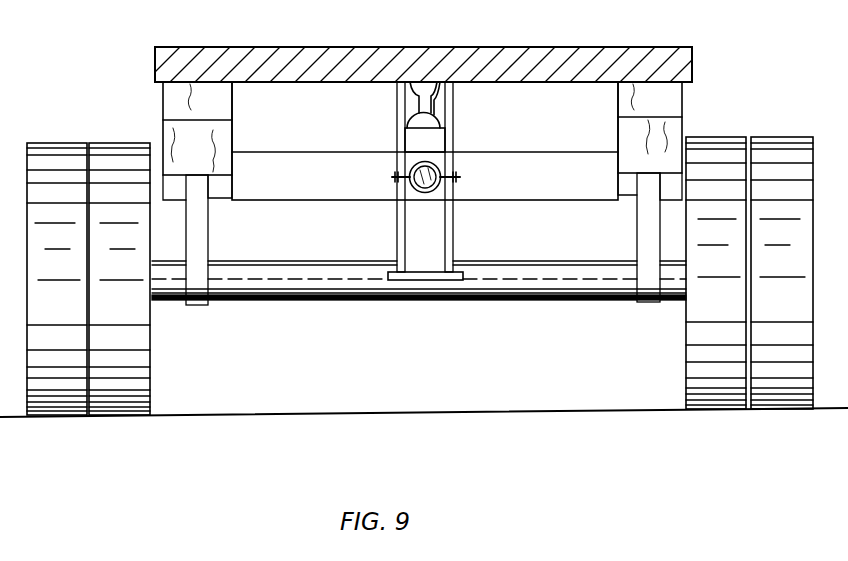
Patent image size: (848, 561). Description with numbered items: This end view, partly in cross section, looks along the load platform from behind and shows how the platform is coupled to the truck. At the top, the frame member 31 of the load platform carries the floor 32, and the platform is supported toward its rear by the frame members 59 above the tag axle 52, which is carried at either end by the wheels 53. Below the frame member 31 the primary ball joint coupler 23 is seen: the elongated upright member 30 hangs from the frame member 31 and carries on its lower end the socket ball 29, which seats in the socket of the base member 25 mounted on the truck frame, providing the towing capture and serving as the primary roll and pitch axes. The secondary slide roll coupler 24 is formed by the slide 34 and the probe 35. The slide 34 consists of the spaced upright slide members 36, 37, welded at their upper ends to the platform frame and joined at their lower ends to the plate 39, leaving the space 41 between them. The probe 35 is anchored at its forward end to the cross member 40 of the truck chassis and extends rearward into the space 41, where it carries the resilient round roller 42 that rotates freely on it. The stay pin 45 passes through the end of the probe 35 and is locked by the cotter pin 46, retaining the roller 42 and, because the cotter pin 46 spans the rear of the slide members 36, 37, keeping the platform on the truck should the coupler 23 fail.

The primary ball joint coupler 23 is at (395, 150).
The secondary slide roll coupler 24 is at (399, 219).
The base member 25 is at (432, 145).
The socket ball 29 is at (437, 118).
The elongated upright member 30 is at (418, 93).
The frame member 31 is at (556, 47).
The floor 32 is at (300, 84).
The slide 34 is at (397, 248).
The probe 35 is at (440, 200).
The slide member 36 is at (455, 243).
The slide member 37 is at (412, 262).
The plate 39 is at (458, 282).
The cross member 40 is at (588, 183).
The space 41 is at (440, 240).
The resilient round sleeve or roller 42 is at (410, 185).
The stay pin 45 is at (392, 176).
The cotter pin 46 is at (459, 176).
The tag axle 52 is at (319, 297).
The wheels 53 is at (135, 323).
The frame members 59 is at (163, 96).